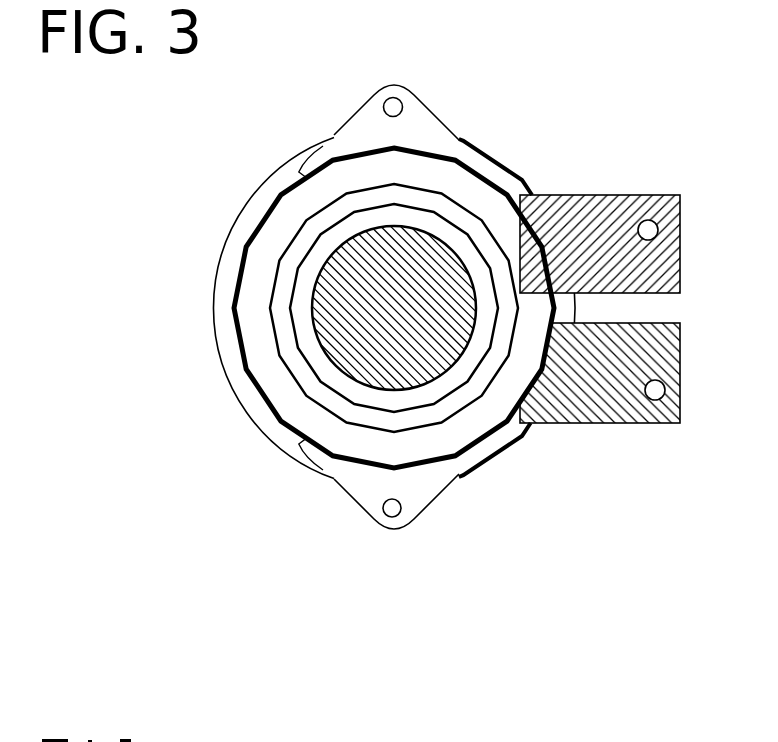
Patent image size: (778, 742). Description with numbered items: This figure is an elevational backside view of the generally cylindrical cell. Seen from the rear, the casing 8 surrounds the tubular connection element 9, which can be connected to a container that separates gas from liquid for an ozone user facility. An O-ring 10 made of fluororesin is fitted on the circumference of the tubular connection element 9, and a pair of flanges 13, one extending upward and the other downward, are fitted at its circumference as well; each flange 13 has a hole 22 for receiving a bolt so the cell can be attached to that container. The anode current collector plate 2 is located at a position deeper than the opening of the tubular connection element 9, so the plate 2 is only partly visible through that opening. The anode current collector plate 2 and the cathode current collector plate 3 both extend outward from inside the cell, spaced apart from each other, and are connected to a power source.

The anode current collector plate 2 is at (418, 232).
The cathode current collector plate 3 is at (610, 393).
The casing 8 is at (280, 176).
The tubular connection element 9 is at (253, 290).
The O-ring 10 is at (287, 333).
The flange 13 is at (353, 477).
The hole 22 is at (397, 508).